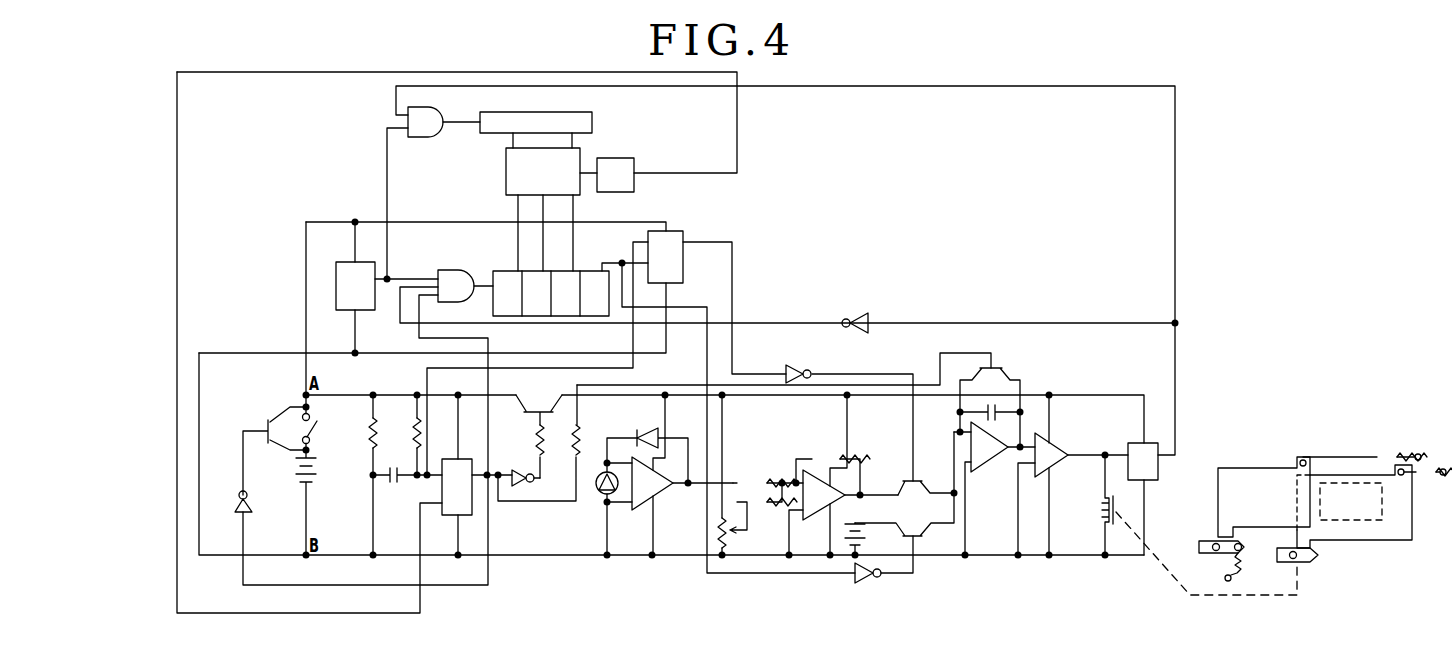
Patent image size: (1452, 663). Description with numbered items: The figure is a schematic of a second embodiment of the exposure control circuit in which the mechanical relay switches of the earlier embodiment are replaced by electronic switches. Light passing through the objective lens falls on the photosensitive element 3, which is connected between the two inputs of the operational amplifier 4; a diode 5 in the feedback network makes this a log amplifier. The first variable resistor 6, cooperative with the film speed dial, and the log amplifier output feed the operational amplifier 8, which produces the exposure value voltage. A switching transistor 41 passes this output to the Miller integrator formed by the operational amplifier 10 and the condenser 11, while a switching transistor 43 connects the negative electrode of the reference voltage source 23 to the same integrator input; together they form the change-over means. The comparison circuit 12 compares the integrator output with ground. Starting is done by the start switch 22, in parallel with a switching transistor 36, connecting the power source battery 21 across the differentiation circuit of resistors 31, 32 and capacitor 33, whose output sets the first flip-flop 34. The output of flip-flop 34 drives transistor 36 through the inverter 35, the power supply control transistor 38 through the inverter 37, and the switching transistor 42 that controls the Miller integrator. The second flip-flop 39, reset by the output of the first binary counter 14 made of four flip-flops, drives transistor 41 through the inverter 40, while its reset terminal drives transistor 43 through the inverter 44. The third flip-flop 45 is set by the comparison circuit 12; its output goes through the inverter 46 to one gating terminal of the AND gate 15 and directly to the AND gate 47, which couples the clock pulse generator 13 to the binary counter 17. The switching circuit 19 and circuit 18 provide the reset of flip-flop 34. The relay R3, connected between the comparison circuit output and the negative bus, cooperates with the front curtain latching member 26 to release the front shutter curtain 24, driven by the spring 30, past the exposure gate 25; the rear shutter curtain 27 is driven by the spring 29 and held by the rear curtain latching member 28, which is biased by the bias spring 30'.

The photosensitive element 3 is at (609, 496).
The operational amplifier 4 is at (670, 475).
The diode 5 is at (648, 430).
The first variable resistor 6 is at (718, 530).
The operational amplifier 8 is at (843, 475).
The operational amplifier 10 is at (994, 483).
The condenser 11 is at (996, 405).
The comparison circuit 12 is at (1050, 445).
The clock pulse generator 13 is at (387, 289).
The first 4-bit binary counter 14 is at (584, 270).
The AND gate 15 is at (465, 286).
The binary counter 17 is at (592, 123).
The detecting circuit 18 is at (551, 209).
The switching circuit 19 is at (615, 175).
The power source battery 21 is at (319, 502).
The start switch 22 is at (320, 424).
The reference voltage source 23 is at (867, 539).
The front shutter curtain 24 is at (1385, 532).
The exposure gate 25 is at (1350, 510).
The front curtain latching member 26 is at (1292, 562).
The rear shutter curtain 27 is at (1264, 497).
The rear curtain latching member 28 is at (1226, 553).
The spring 29 is at (1365, 445).
The spring 30 is at (1428, 488).
The bias spring 30' is at (1252, 573).
The resistor 31 is at (370, 446).
The resistor 32 is at (403, 435).
The capacitor 33 is at (394, 485).
The first flip-flop 34 is at (460, 459).
The inverter 35 is at (256, 501).
The switching transistor 36 is at (278, 416).
The inverter 37 is at (518, 468).
The power supply control transistor 38 is at (539, 428).
The second flip-flop 39 is at (683, 232).
The inverter 40 is at (799, 360).
The switching transistor 41 is at (923, 472).
The switching transistor 42 is at (1001, 365).
The switching transistor 43 is at (904, 491).
The inverter 44 is at (868, 584).
The third flip-flop 45 is at (1158, 474).
The inverter 46 is at (854, 309).
The AND gate 47 is at (444, 122).
The relay R3 is at (1096, 505).